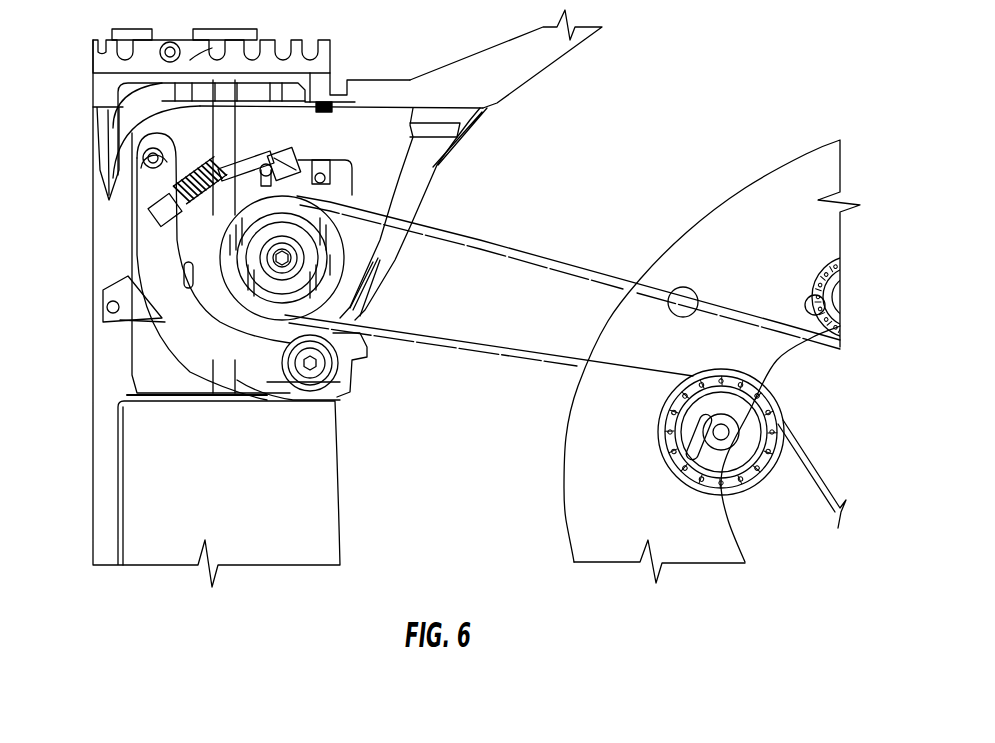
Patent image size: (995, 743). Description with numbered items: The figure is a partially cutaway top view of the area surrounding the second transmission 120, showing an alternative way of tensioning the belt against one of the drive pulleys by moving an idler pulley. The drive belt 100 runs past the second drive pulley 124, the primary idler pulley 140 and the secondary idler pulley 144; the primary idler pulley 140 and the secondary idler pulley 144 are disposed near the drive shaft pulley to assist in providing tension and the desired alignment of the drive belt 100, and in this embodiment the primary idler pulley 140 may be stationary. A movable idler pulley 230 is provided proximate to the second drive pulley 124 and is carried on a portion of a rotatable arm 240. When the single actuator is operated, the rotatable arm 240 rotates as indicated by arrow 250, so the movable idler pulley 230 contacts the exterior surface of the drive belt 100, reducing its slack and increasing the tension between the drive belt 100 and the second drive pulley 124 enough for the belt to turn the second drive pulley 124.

The drive belt 100 is at (477, 240).
The second transmission 120 is at (292, 177).
The second drive pulley 124 is at (310, 240).
The primary idler pulley 140 is at (760, 427).
The secondary idler pulley 144 is at (825, 275).
The movable idler pulley 230 is at (337, 343).
The rotatable arm 240 is at (145, 252).
The arrow 250 is at (358, 393).